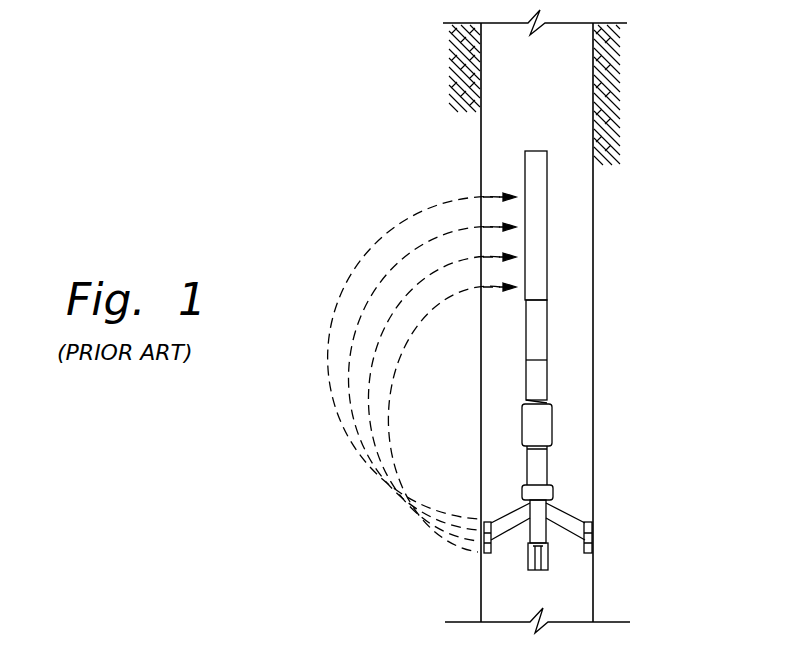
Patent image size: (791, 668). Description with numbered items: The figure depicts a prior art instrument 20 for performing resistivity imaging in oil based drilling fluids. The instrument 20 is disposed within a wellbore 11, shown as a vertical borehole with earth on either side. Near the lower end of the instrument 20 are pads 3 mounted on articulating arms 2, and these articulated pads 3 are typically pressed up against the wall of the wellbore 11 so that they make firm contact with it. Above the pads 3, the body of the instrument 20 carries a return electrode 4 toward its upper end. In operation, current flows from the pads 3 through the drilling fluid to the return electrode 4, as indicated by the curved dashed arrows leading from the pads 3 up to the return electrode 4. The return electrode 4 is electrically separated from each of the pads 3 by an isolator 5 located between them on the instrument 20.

The wellbore 11 is at (571, 197).
The instrument 20 is at (566, 248).
The return electrode 4 is at (525, 172).
The isolator 5 is at (537, 336).
The articulating arms 2 is at (560, 518).
The pads 3 is at (592, 549).